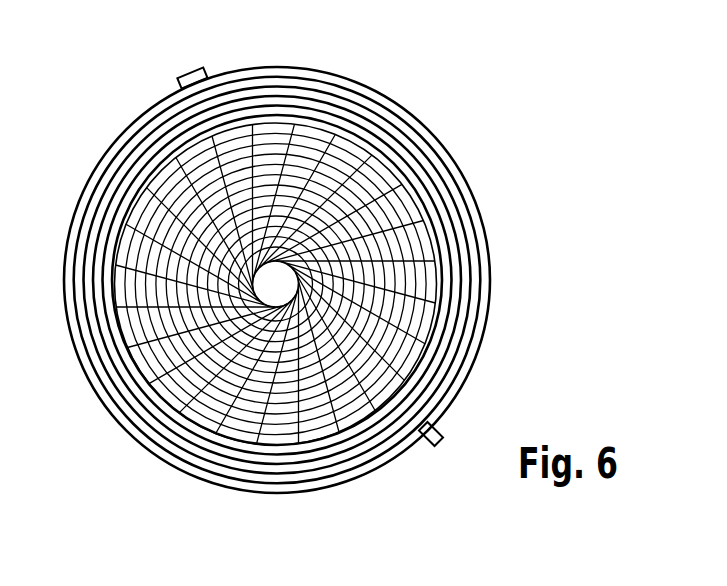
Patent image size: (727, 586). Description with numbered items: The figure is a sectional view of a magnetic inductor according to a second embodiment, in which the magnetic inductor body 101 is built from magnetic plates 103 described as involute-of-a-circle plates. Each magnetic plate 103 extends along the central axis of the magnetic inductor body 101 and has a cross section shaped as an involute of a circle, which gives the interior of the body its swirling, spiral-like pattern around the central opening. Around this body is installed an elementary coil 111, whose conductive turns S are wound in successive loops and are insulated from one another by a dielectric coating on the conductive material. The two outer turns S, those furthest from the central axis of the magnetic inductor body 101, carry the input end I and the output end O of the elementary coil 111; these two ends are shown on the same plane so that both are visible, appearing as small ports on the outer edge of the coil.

The magnetic inductor body 101 is at (369, 176).
The magnetic plate 103 is at (177, 152).
The elementary coil 111 is at (478, 222).
The turns S is at (337, 102).
The input end I is at (192, 72).
The output end O is at (443, 443).